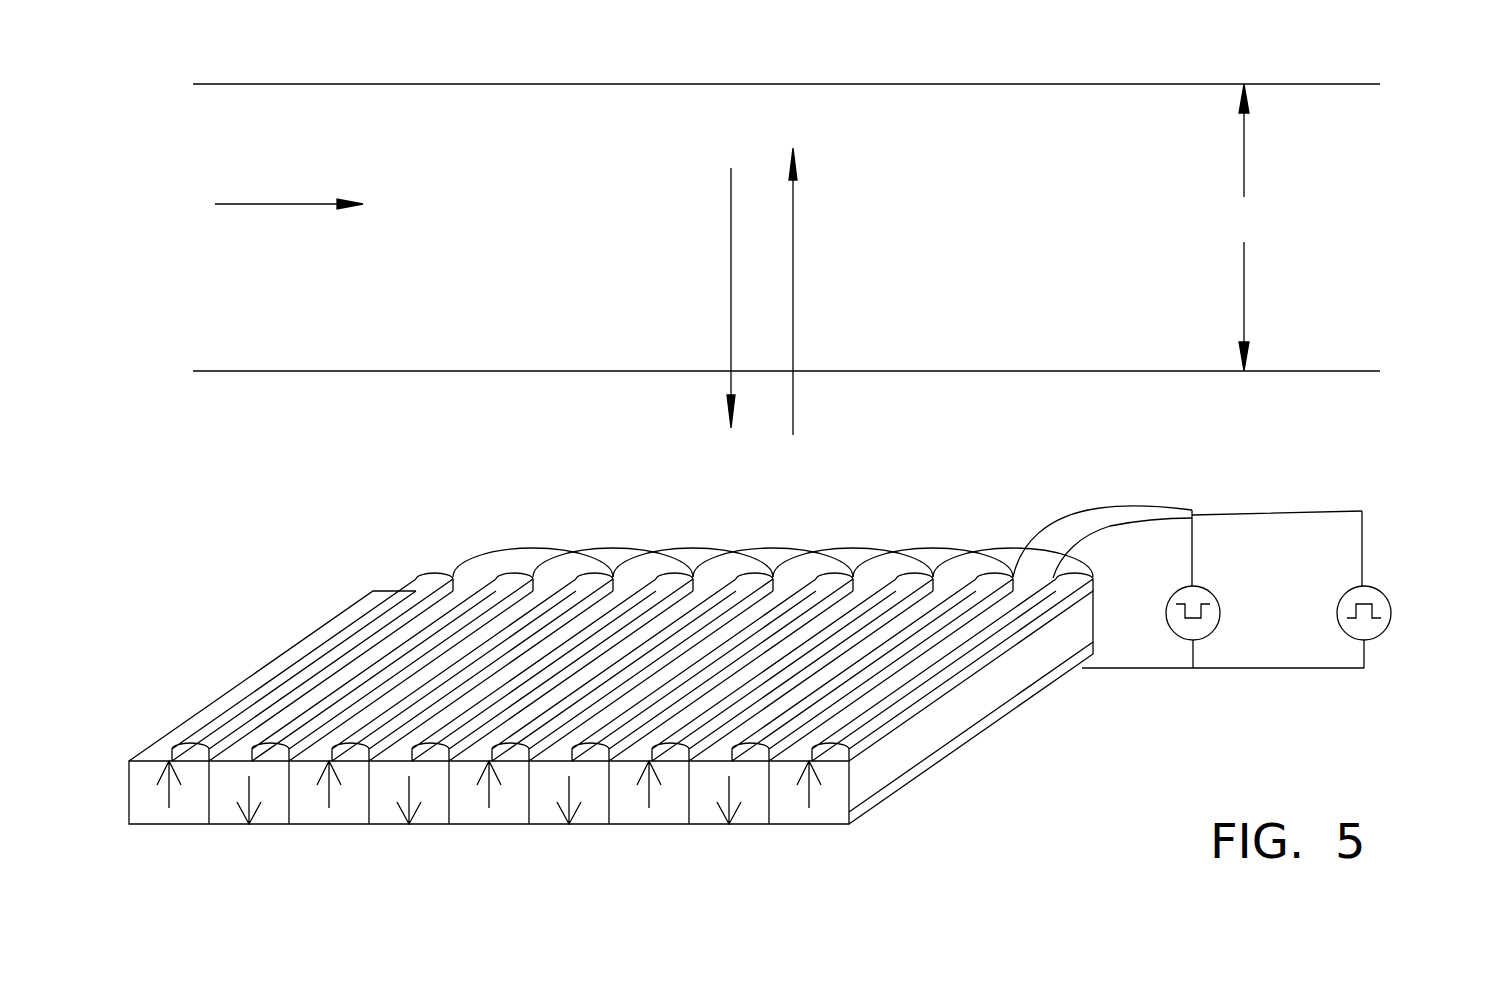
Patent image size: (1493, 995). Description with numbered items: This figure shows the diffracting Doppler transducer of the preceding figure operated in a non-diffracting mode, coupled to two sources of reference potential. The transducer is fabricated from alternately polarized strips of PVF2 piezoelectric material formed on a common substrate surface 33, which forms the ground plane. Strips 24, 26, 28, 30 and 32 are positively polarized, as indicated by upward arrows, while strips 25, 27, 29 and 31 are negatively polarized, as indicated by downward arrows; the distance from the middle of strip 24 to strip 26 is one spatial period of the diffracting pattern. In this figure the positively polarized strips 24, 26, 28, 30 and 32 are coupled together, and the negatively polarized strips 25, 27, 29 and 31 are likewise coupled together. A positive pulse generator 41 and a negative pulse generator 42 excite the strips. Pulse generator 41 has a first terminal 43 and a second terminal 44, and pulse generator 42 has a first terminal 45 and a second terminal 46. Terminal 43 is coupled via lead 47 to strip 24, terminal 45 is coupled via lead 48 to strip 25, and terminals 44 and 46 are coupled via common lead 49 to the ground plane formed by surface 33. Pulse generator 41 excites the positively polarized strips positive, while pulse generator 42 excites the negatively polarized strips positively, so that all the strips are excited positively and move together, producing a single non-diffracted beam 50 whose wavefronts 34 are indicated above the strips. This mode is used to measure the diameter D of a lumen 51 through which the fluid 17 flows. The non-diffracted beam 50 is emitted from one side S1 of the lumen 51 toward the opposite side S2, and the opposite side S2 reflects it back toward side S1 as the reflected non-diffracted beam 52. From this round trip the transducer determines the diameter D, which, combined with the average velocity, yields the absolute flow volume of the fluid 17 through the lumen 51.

The fluid 17 is at (289, 189).
The lumen 51 is at (786, 64).
The opposite side of the lumen S2 is at (723, 84).
The side of the lumen S1 is at (535, 373).
The reflected non-diffracted beam 52 is at (704, 298).
The non-diffracted beam 50 is at (814, 291).
The diameter of the lumen D is at (1246, 227).
The common substrate surface 33 is at (888, 793).
The wavefronts emitted by elements 34 is at (787, 590).
The positively polarized strip 32 is at (193, 826).
The negatively polarized strip 31 is at (273, 826).
The positively polarized strip 30 is at (353, 826).
The negatively polarized strip 29 is at (433, 826).
The positively polarized strip 28 is at (513, 826).
The negatively polarized strip 27 is at (593, 826).
The positively polarized strip 26 is at (673, 826).
The negatively polarized strip 25 is at (753, 826).
The positively polarized strip 24 is at (833, 826).
The lead 47 is at (1142, 523).
The lead 48 is at (1060, 517).
The common lead 49 is at (1140, 670).
The first terminal 45 is at (1192, 587).
The first terminal 43 is at (1363, 587).
The negative pulse generator 42 is at (1220, 621).
The positive pulse generator 41 is at (1391, 621).
The second terminal 46 is at (1196, 640).
The second terminal 44 is at (1367, 640).